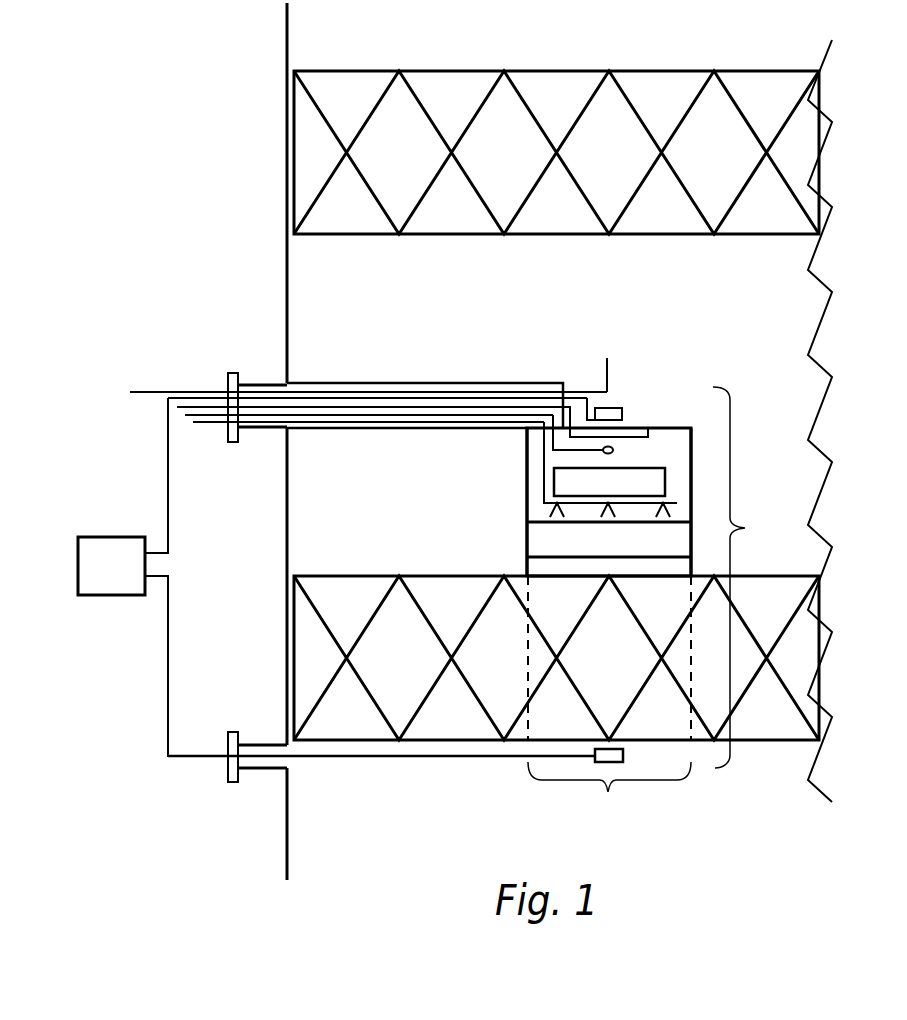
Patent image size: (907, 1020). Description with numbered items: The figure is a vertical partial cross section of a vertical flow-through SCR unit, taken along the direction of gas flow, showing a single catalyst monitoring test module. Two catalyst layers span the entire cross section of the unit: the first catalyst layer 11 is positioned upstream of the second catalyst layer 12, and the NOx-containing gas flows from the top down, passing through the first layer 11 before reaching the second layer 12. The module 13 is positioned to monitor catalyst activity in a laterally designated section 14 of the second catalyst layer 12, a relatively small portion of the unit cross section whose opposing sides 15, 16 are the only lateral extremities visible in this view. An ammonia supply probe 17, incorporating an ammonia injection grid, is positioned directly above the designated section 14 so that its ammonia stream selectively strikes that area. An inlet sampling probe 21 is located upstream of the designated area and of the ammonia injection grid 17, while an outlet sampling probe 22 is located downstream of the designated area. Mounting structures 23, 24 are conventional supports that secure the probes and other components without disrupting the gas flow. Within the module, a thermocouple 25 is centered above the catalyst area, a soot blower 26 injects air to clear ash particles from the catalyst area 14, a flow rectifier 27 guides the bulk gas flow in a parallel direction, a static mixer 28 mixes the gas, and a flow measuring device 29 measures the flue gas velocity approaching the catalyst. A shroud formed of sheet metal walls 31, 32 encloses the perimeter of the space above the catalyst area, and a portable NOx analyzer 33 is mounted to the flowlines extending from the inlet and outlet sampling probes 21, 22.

The first catalyst layer 11 is at (672, 88).
The second catalyst layer 12 is at (797, 652).
The module 13 is at (749, 577).
The designated section 14 is at (609, 795).
The side of the section 15 is at (527, 688).
The side of the section 16 is at (691, 687).
The ammonia supply probe 17 is at (637, 427).
The inlet sampling probe 21 is at (617, 407).
The outlet sampling probe 22 is at (607, 762).
The mounting structure 23 is at (378, 432).
The mounting structure 24 is at (385, 757).
The thermocouple 25 is at (614, 449).
The soot blower 26 is at (547, 510).
The flow rectifier 27 is at (543, 545).
The static mixer 28 is at (560, 483).
The flow measuring device 29 is at (608, 373).
The sheet metal wall 31 is at (527, 457).
The sheet metal wall 32 is at (693, 478).
The portable NOx analyzer 33 is at (105, 537).